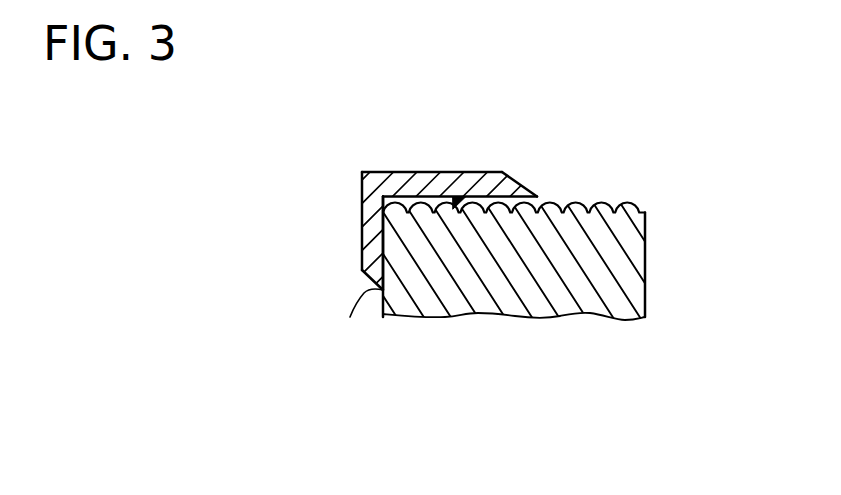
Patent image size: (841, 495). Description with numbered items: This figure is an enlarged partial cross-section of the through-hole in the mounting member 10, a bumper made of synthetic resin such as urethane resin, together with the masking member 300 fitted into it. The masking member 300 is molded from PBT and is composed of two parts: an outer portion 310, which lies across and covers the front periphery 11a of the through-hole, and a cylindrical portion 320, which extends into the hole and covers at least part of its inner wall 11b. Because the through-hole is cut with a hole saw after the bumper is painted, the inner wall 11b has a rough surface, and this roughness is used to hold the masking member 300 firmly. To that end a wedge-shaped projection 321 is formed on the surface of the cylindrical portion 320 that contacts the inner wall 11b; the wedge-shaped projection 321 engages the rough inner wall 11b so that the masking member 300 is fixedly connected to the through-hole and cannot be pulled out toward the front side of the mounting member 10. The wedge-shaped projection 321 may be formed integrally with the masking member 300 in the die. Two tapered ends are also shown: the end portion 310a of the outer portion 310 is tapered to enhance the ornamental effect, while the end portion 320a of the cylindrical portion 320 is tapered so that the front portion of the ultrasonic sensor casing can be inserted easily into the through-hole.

The mounting member 10 is at (653, 321).
The front periphery of the through-hole 11a is at (387, 258).
The inner wall of the through-hole 11b is at (577, 202).
The masking member 300 is at (353, 161).
The outer portion 310 is at (376, 223).
The end portion of the outer portion 310a is at (372, 281).
The cylindrical portion 320 is at (500, 184).
The end portion of the cylindrical portion 320a is at (530, 187).
The wedge-shaped projection 321 is at (456, 193).